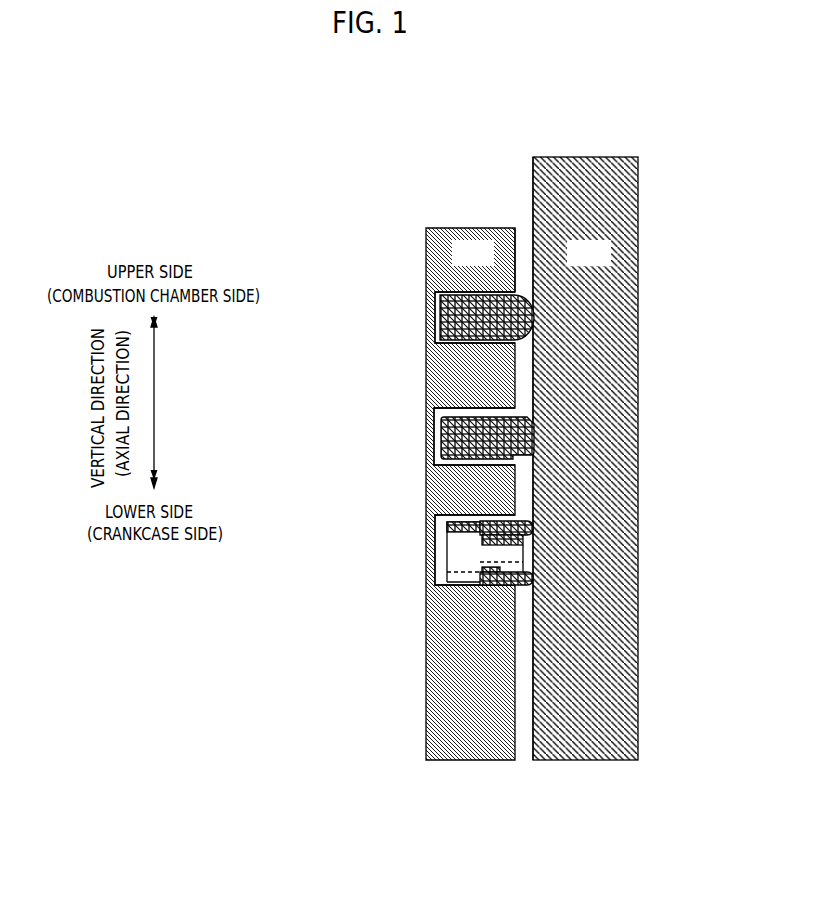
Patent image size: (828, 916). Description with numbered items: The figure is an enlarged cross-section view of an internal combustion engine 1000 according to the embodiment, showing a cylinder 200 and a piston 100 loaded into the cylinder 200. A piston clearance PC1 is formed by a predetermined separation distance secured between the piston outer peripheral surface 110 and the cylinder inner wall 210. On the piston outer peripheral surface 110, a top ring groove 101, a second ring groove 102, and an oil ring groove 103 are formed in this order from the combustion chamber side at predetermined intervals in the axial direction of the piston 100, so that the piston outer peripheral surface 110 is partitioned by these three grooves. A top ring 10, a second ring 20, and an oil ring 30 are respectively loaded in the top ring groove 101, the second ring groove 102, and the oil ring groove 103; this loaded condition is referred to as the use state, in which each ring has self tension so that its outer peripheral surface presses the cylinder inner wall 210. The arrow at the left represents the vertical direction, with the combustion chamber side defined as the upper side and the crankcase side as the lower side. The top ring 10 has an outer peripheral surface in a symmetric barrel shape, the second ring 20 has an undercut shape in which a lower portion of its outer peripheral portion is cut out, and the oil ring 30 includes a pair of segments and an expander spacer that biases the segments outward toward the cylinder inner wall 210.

The internal combustion engine 1000 is at (330, 127).
The piston 100 is at (413, 474).
The piston outer peripheral surface 110 is at (519, 246).
The top ring groove 101 is at (434, 291).
The second ring groove 102 is at (434, 409).
The oil ring groove 103 is at (434, 516).
The cylinder 200 is at (552, 458).
The cylinder inner wall 210 is at (533, 196).
The top ring 10 is at (537, 325).
The second ring 20 is at (537, 458).
The oil ring 30 is at (537, 585).
The piston clearance PC1 is at (524, 752).